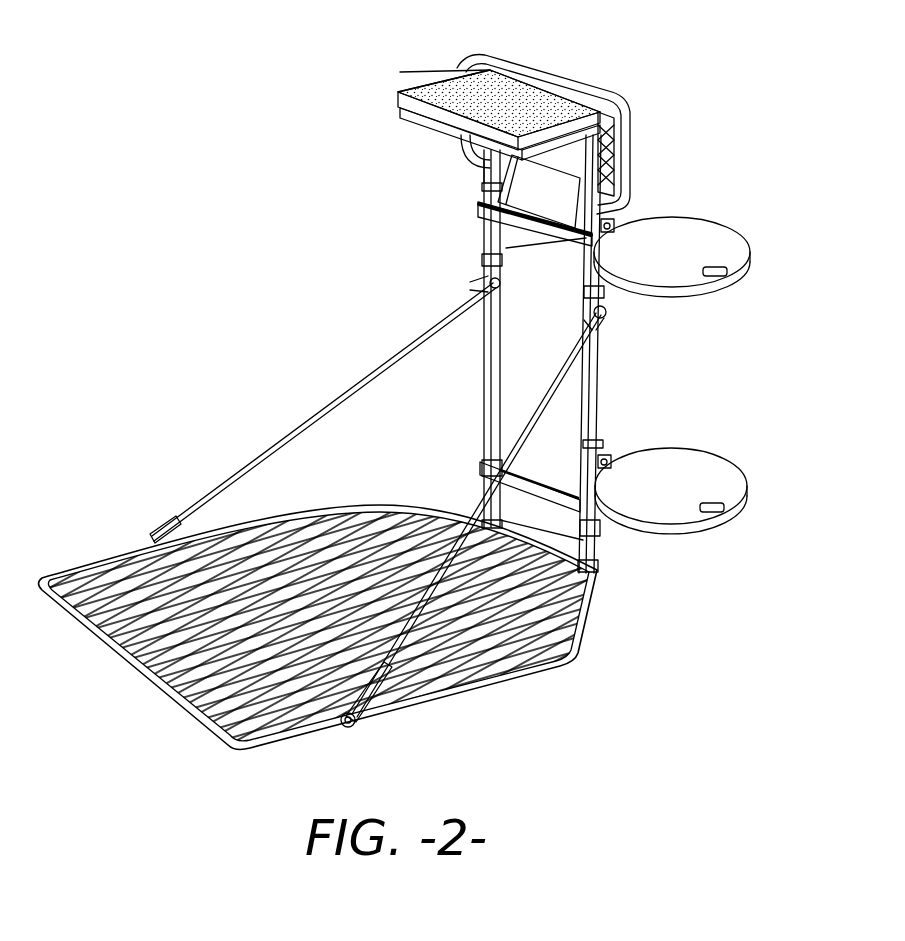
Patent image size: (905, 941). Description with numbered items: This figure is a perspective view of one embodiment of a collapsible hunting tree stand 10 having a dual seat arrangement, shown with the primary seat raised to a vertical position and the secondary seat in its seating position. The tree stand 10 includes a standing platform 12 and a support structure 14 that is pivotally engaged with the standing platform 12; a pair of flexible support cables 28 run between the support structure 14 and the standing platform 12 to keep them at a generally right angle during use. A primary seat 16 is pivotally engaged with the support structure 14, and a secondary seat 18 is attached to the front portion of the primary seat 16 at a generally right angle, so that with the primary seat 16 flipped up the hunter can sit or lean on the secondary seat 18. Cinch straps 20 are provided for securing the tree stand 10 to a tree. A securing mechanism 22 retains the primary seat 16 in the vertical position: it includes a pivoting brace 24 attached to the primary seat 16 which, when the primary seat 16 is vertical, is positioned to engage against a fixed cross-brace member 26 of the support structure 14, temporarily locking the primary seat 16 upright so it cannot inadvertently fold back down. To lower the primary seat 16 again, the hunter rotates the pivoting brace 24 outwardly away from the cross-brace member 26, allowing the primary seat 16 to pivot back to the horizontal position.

The collapsible hunting tree stand 10 is at (274, 185).
The standing platform 12 is at (112, 652).
The support structure 14 is at (505, 352).
The primary seat 16 is at (637, 150).
The secondary seat 18 is at (453, 92).
The cinch straps 20 is at (678, 226).
The securing mechanism 22 is at (473, 233).
The pivoting brace 24 is at (487, 188).
The fixed cross-brace member 26 is at (480, 213).
The flexible support cables 28 is at (300, 427).